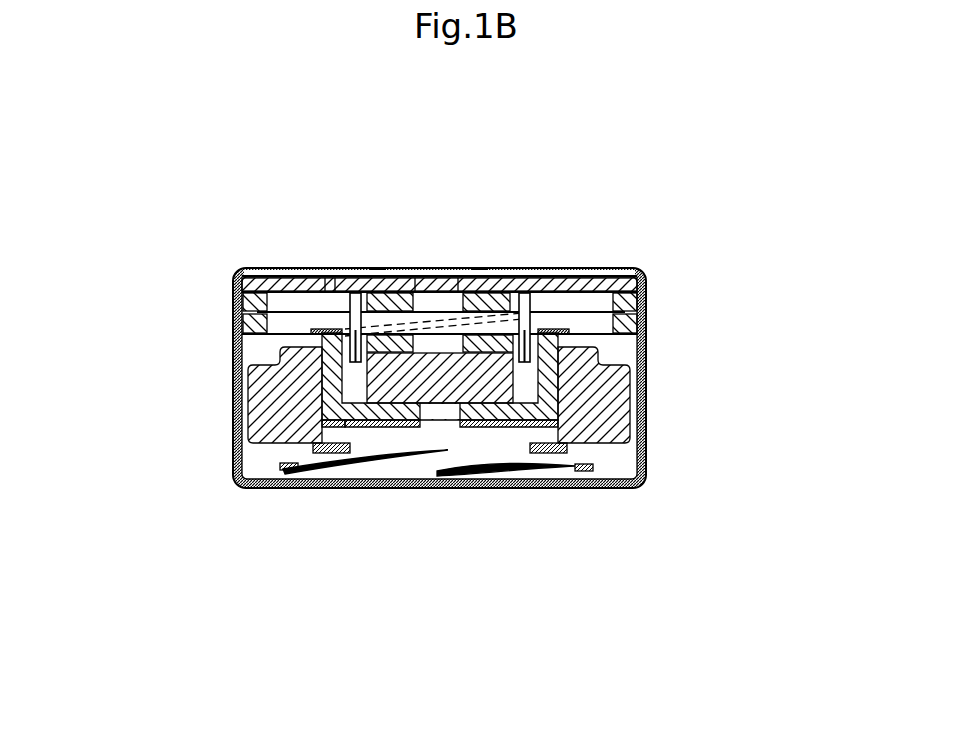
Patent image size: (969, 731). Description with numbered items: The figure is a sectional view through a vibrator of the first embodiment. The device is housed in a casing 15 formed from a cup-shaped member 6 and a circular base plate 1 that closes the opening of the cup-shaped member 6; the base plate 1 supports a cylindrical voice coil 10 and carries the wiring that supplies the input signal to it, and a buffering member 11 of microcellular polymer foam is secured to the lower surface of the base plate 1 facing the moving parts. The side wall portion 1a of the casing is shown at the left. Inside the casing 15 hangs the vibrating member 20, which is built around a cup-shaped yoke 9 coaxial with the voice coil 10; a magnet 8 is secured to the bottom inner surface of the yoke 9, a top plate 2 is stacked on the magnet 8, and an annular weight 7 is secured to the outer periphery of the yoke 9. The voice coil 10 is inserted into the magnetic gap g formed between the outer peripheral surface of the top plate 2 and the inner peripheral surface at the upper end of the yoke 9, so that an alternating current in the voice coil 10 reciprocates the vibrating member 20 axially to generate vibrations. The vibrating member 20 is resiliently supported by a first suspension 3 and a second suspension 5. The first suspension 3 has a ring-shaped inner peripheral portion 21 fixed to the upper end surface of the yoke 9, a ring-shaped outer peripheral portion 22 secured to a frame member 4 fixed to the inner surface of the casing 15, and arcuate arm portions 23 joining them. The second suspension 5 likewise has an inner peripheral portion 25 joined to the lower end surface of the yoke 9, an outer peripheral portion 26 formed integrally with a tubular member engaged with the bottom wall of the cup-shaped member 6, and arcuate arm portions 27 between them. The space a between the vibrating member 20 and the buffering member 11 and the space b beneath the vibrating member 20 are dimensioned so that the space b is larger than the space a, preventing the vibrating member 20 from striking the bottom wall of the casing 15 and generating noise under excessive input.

The base plate 1 is at (647, 274).
The side wall of case 1a is at (230, 370).
The top plate 2 is at (561, 440).
The first suspension 3 is at (575, 107).
The frame member 4 is at (230, 292).
The second suspension 5 is at (317, 577).
The cup-shaped member 6 is at (647, 353).
The annular weight 7 is at (565, 397).
The magnet 8 is at (545, 420).
The yoke 9 is at (410, 353).
The voice coil 10 is at (480, 272).
The buffering member 11 is at (378, 268).
The casing 15 is at (762, 258).
The vibrating member 20 is at (777, 445).
The inner peripheral portion 21 is at (523, 294).
The outer peripheral portion 22 is at (551, 328).
The arm portions 23 is at (429, 310).
The inner peripheral portion 25 is at (375, 430).
The outer peripheral portion 26 is at (403, 465).
The arm portions 27 is at (372, 455).
The space a is at (188, 377).
The space b is at (188, 512).
The magnetic gap g is at (282, 442).